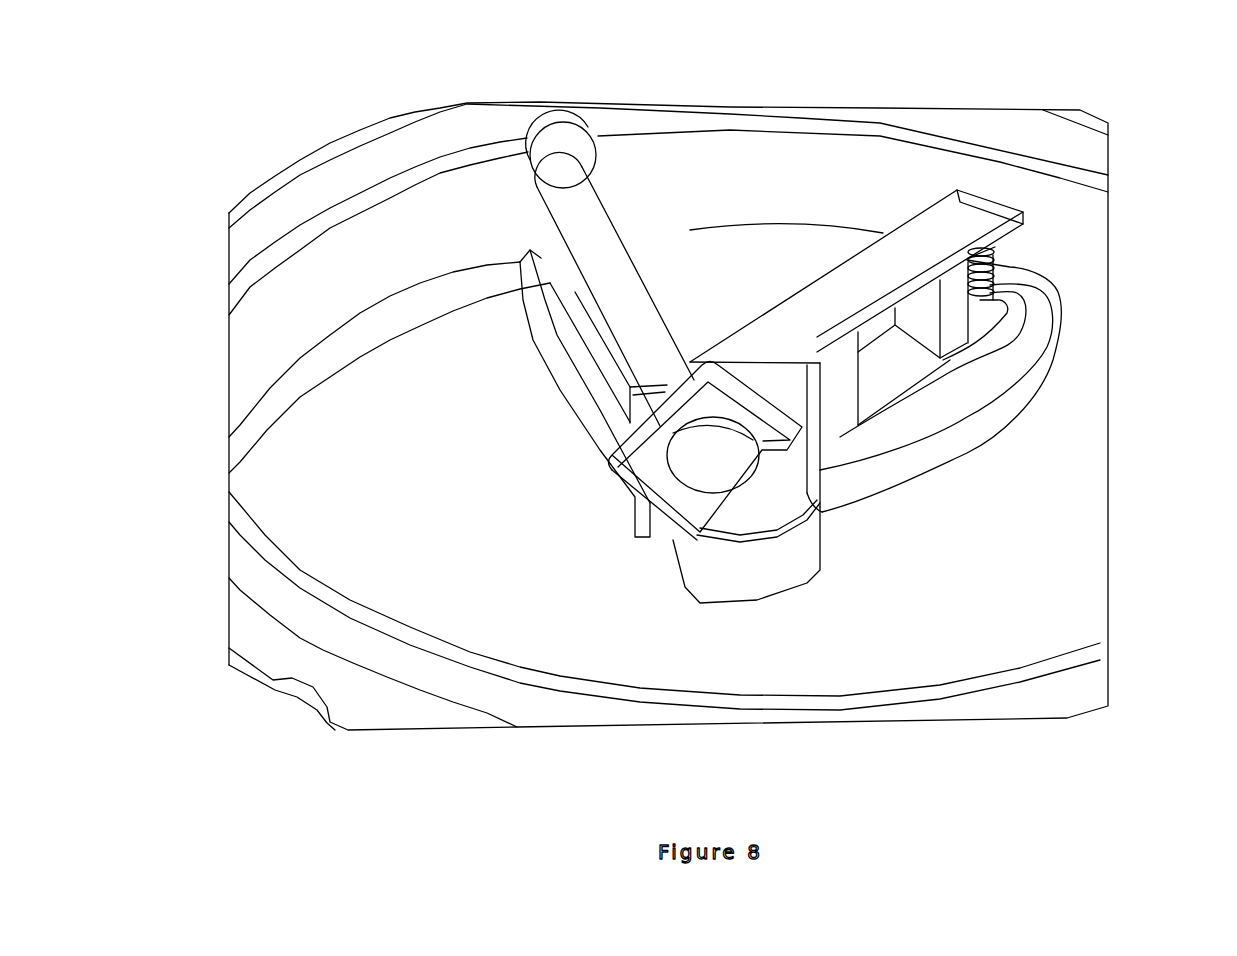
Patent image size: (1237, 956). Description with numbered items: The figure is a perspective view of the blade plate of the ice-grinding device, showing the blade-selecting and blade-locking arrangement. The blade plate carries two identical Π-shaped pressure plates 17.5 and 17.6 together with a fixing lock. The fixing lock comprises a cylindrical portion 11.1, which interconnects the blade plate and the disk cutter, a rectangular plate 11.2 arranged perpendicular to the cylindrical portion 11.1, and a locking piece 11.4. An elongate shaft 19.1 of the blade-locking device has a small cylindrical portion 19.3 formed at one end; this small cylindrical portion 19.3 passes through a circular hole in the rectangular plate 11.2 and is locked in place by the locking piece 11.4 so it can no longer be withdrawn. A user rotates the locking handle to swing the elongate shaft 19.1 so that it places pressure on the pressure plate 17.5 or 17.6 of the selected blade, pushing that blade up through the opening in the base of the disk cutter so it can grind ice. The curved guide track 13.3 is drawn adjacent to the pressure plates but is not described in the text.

The elongate shaft 19.1 is at (575, 198).
The Π-shaped pressure plate 17.5 is at (570, 295).
The Π-shaped pressure plate 17.6 is at (957, 317).
The curved guide track 13.3 is at (942, 448).
The locking piece 11.4 is at (648, 475).
The small cylindrical portion 19.3 is at (715, 475).
The cylindrical portion 11.1 is at (757, 513).
The rectangular plate 11.2 is at (798, 483).